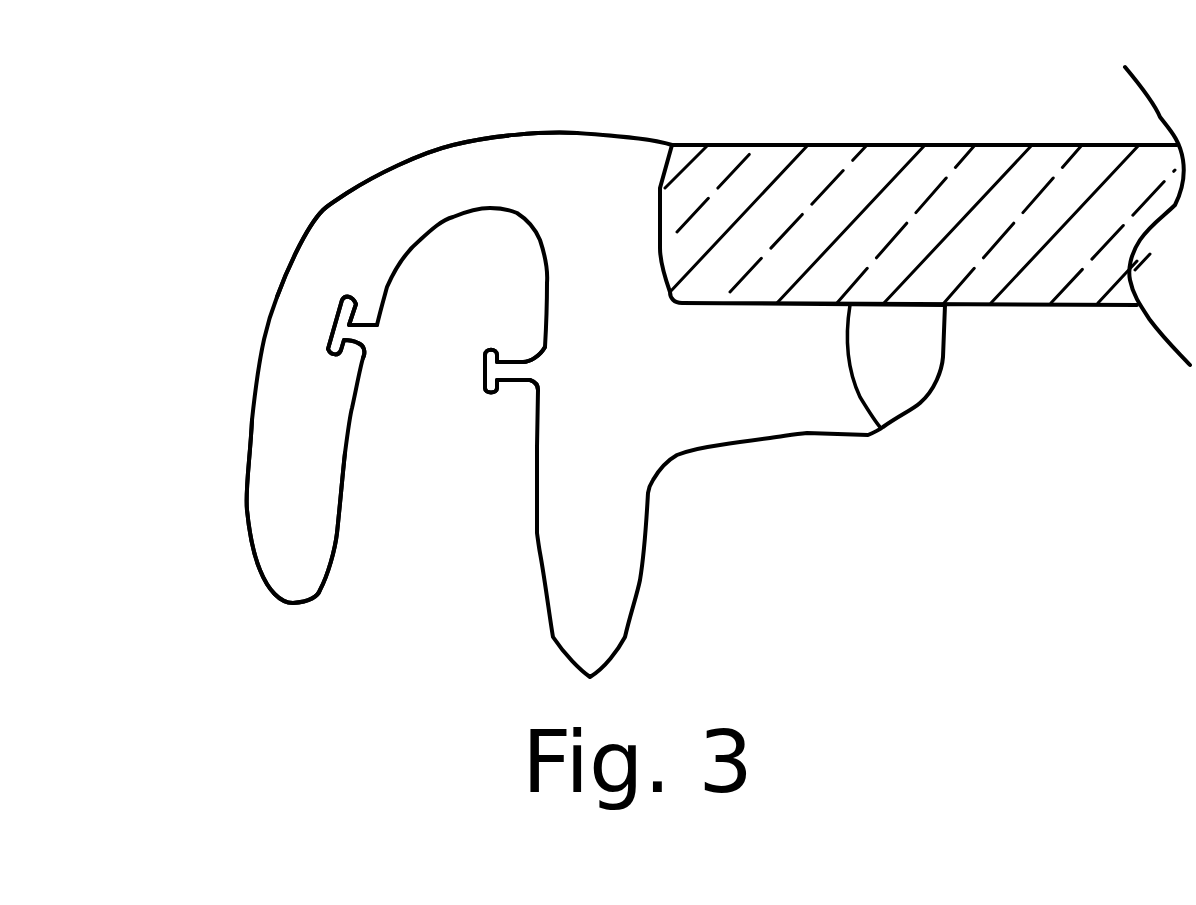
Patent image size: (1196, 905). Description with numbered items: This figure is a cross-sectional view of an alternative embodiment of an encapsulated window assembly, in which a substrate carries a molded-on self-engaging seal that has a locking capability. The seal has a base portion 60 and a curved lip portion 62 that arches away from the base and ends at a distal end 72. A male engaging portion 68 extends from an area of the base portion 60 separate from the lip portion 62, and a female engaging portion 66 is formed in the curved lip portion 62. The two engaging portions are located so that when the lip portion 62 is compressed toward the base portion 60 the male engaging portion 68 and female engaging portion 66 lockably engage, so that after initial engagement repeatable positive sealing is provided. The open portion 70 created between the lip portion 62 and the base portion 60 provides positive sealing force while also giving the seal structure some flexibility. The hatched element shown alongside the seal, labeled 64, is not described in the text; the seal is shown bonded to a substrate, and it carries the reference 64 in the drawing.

The base portion 60 is at (750, 418).
The curved lip portion 62 is at (323, 210).
The rail 64 is at (662, 180).
The female engaging portion 66 is at (353, 333).
The male engaging portion 68 is at (490, 400).
The open portion 70 is at (535, 533).
The distal end 72 is at (247, 512).